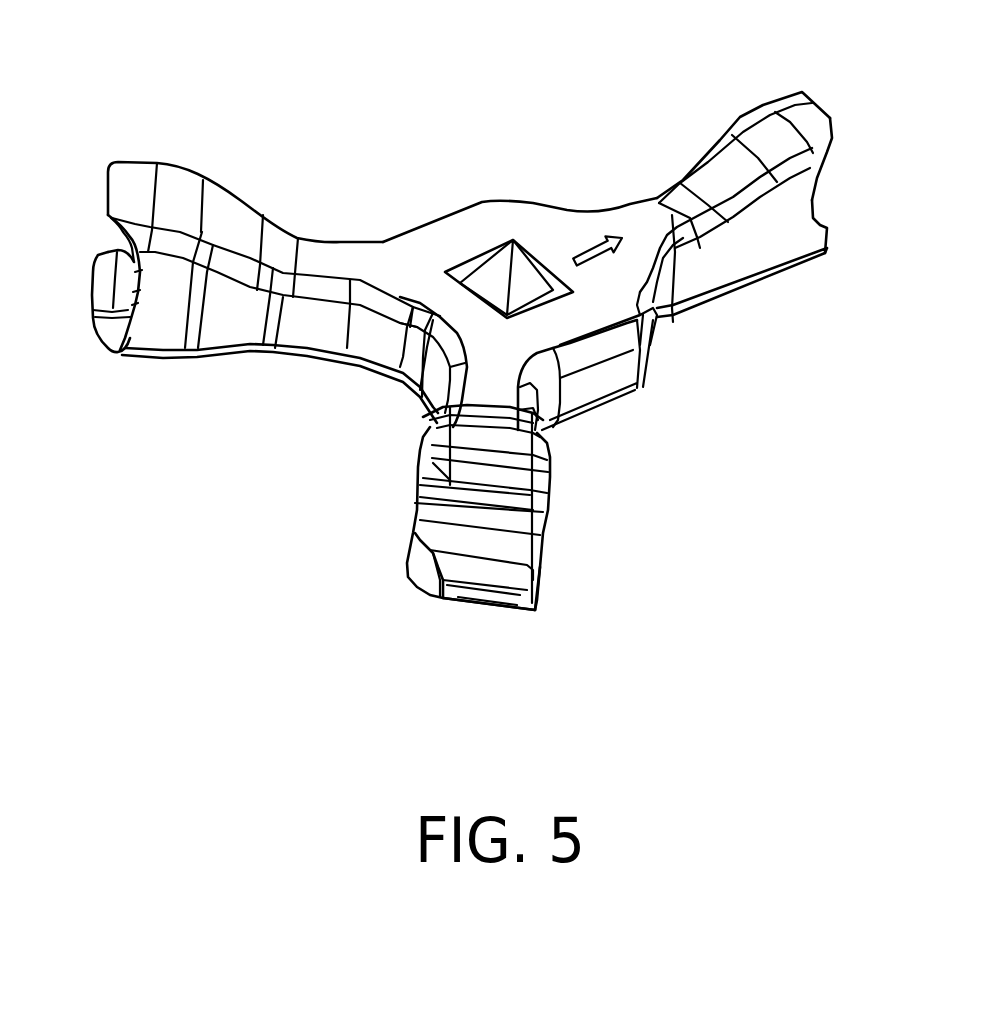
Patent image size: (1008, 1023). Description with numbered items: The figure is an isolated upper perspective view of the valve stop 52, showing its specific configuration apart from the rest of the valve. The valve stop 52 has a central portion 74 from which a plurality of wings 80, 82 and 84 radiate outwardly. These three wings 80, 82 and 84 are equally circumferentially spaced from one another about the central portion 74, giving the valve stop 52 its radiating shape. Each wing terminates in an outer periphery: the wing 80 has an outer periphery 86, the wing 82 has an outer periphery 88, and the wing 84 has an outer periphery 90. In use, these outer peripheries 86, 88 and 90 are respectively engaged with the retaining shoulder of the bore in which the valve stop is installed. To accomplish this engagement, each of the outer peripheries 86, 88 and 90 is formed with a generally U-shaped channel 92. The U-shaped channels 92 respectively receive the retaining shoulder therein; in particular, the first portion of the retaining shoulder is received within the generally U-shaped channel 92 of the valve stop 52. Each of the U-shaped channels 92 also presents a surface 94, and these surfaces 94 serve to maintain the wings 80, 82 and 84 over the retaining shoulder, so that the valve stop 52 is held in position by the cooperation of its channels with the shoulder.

The valve stop 52 is at (587, 145).
The central portion 74 is at (460, 232).
The wing 80 is at (740, 118).
The wing 82 is at (547, 507).
The wing 84 is at (173, 167).
The outer periphery 86 is at (832, 110).
The outer periphery 88 is at (507, 603).
The outer periphery 90 is at (108, 168).
The generally U-shaped channel 92 is at (117, 247).
The surface 94 is at (90, 330).